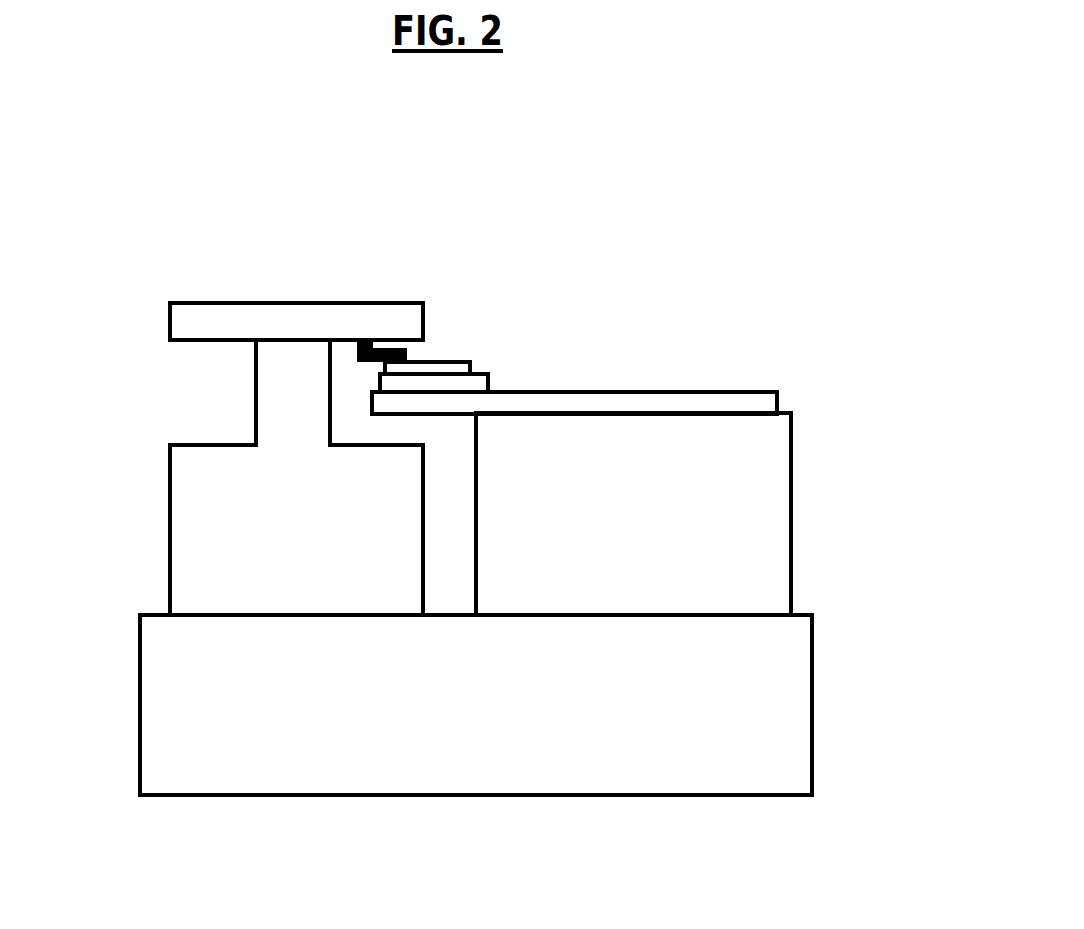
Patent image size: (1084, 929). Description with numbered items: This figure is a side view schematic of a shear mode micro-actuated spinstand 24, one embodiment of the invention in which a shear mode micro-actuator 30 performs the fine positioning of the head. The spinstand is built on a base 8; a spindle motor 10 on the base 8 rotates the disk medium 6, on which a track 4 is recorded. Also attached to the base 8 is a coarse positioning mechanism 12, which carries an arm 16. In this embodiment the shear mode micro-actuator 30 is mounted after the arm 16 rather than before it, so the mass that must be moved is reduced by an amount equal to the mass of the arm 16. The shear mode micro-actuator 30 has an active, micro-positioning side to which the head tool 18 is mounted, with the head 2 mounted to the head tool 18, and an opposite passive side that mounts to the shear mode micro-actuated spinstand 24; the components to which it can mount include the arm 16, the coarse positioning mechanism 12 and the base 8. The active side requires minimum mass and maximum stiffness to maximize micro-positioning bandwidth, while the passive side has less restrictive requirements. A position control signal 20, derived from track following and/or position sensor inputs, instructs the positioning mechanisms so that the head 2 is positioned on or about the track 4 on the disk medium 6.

The head 2 is at (408, 350).
The track 4 is at (363, 333).
The disk medium 6 is at (210, 323).
The base 8 is at (740, 711).
The spindle motor 10 is at (210, 533).
The coarse positioning mechanism 12 is at (732, 556).
The arm 16 is at (683, 402).
The head tool 18 is at (453, 368).
The position control signal 20 is at (607, 282).
The shear mode micro-actuated spinstand 24 is at (250, 190).
The shear mode micro-actuator 30 is at (467, 385).